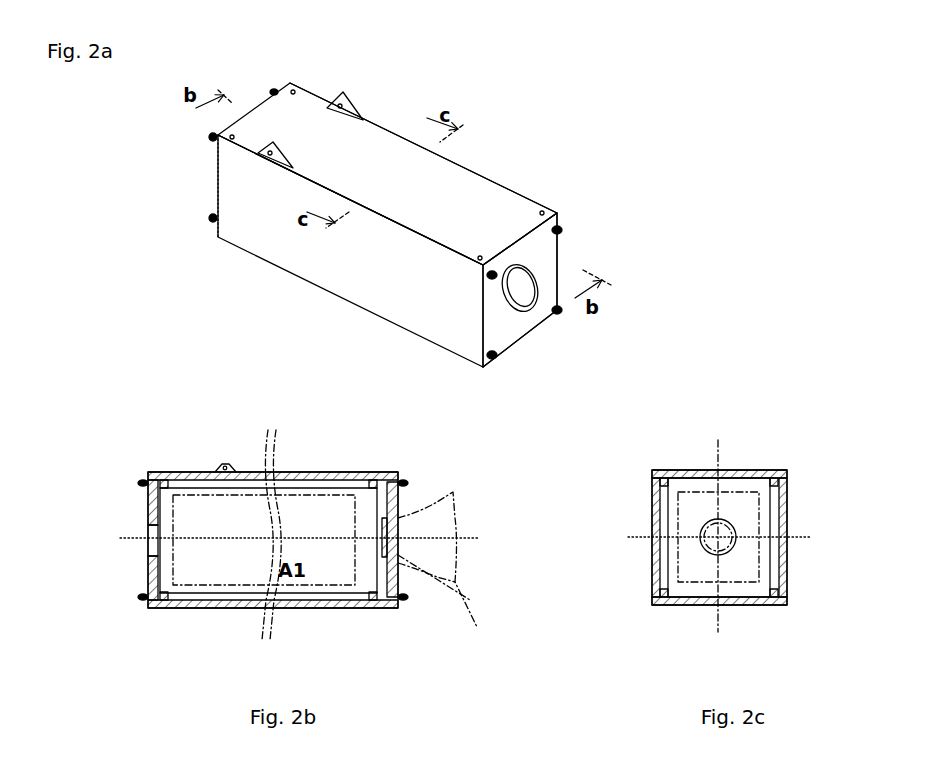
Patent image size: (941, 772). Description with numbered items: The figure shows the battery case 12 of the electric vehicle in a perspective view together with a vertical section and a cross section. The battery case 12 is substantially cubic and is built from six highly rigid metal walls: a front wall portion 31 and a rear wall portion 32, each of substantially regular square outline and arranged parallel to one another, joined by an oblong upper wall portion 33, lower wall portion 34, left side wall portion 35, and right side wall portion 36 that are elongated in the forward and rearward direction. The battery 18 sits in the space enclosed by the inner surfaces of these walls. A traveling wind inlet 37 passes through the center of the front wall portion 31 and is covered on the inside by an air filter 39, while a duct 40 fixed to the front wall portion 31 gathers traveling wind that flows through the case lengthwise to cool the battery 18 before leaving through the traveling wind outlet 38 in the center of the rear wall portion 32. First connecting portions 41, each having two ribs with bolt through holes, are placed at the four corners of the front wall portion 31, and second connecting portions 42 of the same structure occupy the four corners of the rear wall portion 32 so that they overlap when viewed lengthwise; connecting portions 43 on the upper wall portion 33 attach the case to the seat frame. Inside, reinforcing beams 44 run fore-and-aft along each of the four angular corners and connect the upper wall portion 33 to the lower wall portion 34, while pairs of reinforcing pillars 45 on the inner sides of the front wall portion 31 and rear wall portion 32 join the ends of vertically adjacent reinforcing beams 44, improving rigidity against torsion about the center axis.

In FIG. 2A, the battery case 12 is at (590, 128).
In FIG. 2B, the battery case 12 is at (118, 417).
In FIG. 2C, the battery case 12 is at (826, 412).
In FIG. 2B, the battery 18 is at (268, 560).
In FIG. 2C, the battery 18 is at (722, 470).
In FIG. 2A, the front wall portion 31 is at (512, 332).
In FIG. 2B, the front wall portion 31 is at (393, 608).
In FIG. 2C, the front wall portion 31 is at (787, 575).
In FIG. 2B, the rear wall portion 32 is at (149, 572).
In FIG. 2A, the upper wall portion 33 is at (482, 190).
In FIG. 2B, the upper wall portion 33 is at (297, 476).
In FIG. 2C, the upper wall portion 33 is at (752, 470).
In FIG. 2B, the lower wall portion 34 is at (301, 609).
In FIG. 2C, the lower wall portion 34 is at (724, 606).
In FIG. 2A, the left side wall portion 35 is at (370, 282).
In FIG. 2C, the left side wall portion 35 is at (652, 502).
In FIG. 2B, the right side wall portion 36 is at (199, 594).
In FIG. 2C, the right side wall portion 36 is at (787, 495).
In FIG. 2A, the traveling wind inlet 37 is at (532, 304).
In FIG. 2B, the traveling wind inlet 37 is at (380, 594).
In FIG. 2C, the traveling wind inlet 37 is at (702, 542).
In FIG. 2B, the traveling wind outlet 38 is at (148, 532).
In FIG. 2B, the air filter 39 is at (380, 531).
In FIG. 2C, the air filter 39 is at (710, 560).
In FIG. 2B, the duct 40 is at (462, 600).
In FIG. 2A, the first connecting portions 41 is at (568, 234).
In FIG. 2B, the first connecting portions 41 is at (412, 470).
In FIG. 2A, the second connecting portions 42 is at (272, 88).
In FIG. 2B, the second connecting portions 42 is at (137, 478).
In FIG. 2A, the connecting portions 43 is at (280, 146).
In FIG. 2B, the connecting portions 43 is at (228, 464).
In FIG. 2B, the reinforcing beams 44 is at (259, 480).
In FIG. 2C, the reinforcing beams 44 is at (662, 480).
In FIG. 2B, the reinforcing pillars 45 is at (176, 487).
In FIG. 2C, the reinforcing pillars 45 is at (679, 478).